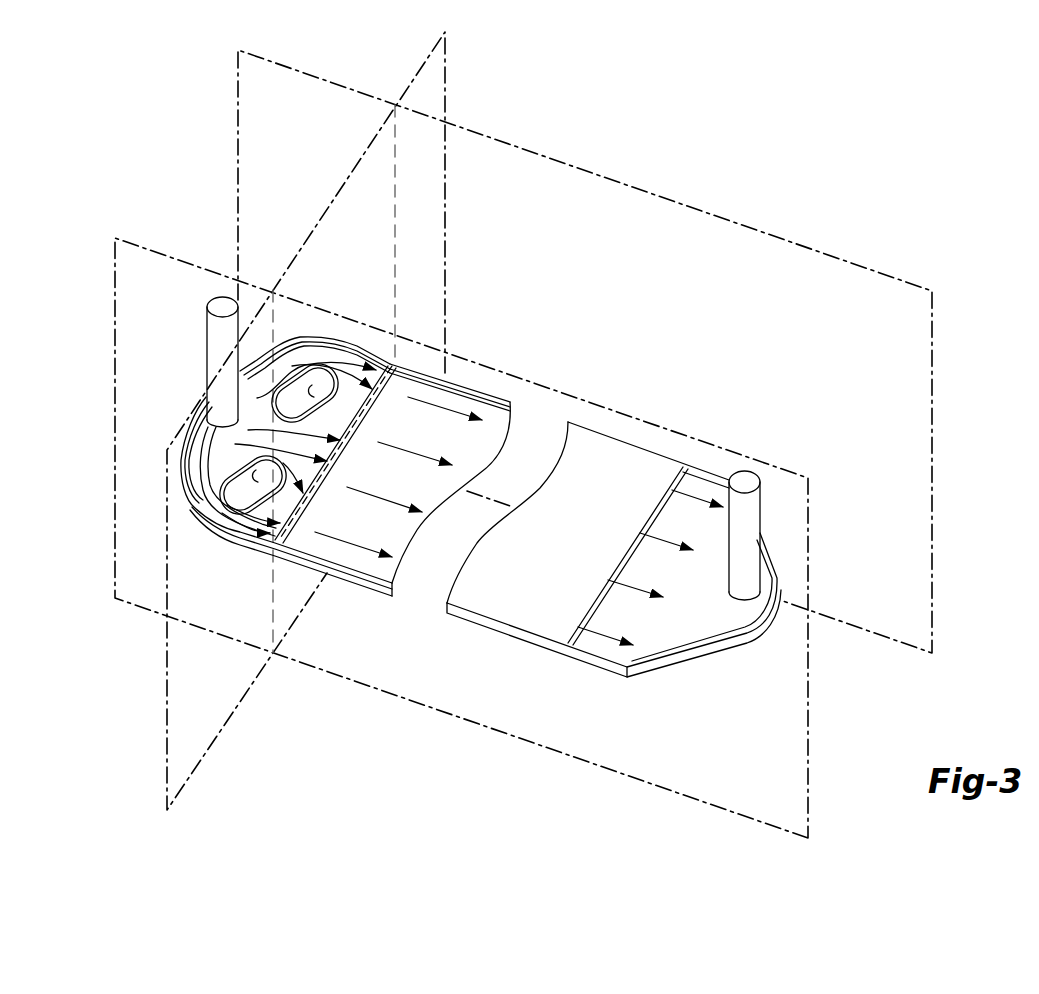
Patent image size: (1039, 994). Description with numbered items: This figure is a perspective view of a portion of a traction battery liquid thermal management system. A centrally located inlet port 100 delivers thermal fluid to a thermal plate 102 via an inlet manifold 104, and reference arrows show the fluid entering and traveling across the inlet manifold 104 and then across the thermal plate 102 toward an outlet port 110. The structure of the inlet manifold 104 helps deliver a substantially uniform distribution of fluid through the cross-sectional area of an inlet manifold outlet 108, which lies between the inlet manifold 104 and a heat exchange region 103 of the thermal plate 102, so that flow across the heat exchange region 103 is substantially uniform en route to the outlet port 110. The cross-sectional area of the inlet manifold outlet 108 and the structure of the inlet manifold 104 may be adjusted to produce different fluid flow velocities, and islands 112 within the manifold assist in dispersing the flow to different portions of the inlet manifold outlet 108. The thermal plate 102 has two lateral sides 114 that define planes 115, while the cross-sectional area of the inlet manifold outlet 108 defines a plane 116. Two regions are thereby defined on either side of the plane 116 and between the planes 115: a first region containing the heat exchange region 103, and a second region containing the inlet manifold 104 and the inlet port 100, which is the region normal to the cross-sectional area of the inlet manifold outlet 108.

The inlet port 100 is at (217, 340).
The thermal plate 102 is at (140, 108).
The heat exchange region 103 is at (490, 422).
The inlet manifold 104 is at (255, 424).
The inlet manifold outlet 108 is at (368, 350).
The outlet port 110 is at (752, 523).
The islands 112 is at (317, 393).
The lateral sides 114 is at (462, 372).
The planes 115 is at (903, 397).
The plane 116 is at (340, 215).